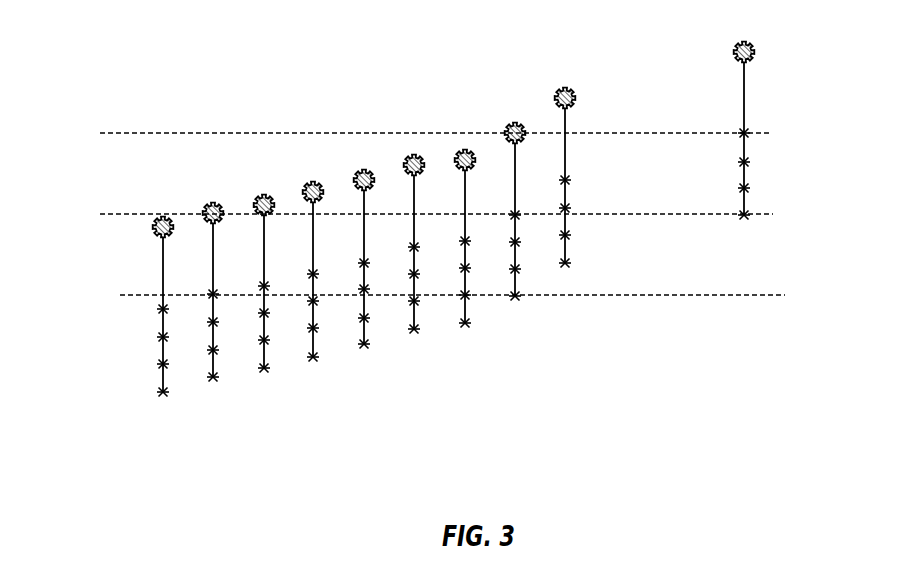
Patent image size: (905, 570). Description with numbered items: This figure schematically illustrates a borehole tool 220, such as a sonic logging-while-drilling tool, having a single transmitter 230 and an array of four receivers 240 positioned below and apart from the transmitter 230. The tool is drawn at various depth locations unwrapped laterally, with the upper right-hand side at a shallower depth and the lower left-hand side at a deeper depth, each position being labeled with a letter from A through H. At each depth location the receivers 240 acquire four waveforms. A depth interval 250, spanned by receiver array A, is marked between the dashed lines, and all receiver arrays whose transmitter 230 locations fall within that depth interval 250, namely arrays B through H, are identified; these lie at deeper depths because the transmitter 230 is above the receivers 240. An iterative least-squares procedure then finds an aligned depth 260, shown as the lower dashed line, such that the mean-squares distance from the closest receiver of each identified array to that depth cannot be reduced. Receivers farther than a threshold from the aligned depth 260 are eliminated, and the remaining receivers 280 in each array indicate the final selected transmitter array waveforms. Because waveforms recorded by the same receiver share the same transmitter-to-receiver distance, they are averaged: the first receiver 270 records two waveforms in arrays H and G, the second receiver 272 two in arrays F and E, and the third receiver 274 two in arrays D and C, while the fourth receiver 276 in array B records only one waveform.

The borehole tool 220 is at (760, 135).
The transmitter 230 is at (732, 46).
The receivers 240 is at (748, 213).
The depth interval 250 is at (123, 134).
The aligned depth 260 is at (120, 294).
The first receiver 270 is at (260, 283).
The second receiver 272 is at (361, 283).
The third receiver 274 is at (462, 292).
The fourth receiver 276 is at (512, 292).
The receivers of the final selected transmitter array waveforms 280 is at (360, 298).